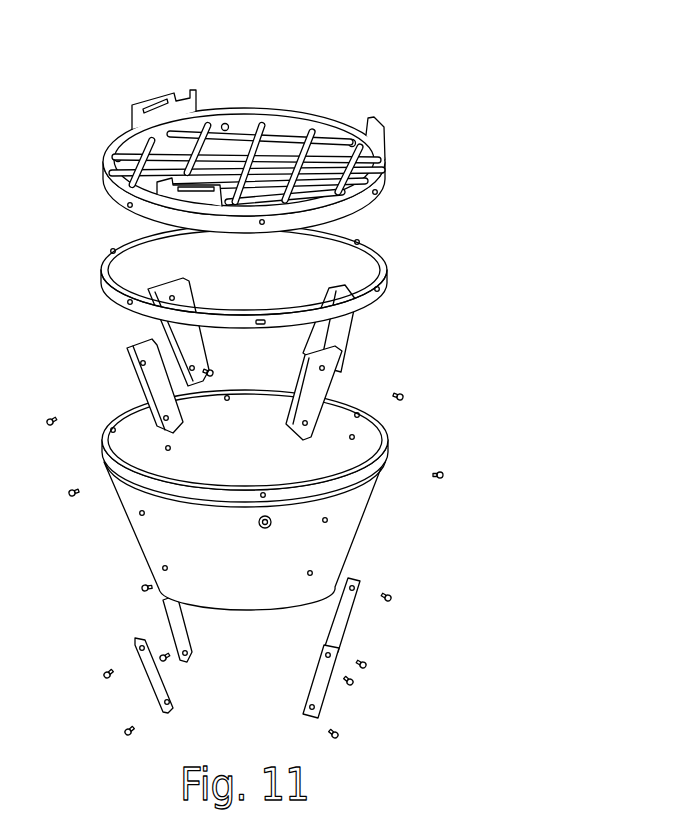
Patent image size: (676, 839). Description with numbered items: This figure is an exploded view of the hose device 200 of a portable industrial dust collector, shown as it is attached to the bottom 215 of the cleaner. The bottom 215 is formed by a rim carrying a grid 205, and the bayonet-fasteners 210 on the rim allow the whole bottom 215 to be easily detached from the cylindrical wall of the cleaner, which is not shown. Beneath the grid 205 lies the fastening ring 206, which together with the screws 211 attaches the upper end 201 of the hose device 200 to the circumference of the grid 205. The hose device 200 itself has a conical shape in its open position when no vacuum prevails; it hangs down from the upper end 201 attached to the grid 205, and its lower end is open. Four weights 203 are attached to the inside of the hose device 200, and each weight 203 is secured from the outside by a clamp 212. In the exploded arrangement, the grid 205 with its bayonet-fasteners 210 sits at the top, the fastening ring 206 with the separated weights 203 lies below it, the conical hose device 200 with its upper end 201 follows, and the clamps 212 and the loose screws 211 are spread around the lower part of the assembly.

The hose device 200 is at (348, 527).
The upper end 201 is at (388, 458).
The weights 203 is at (325, 392).
The grid 205 is at (328, 138).
The fastening ring 206 is at (387, 283).
The bayonet-fasteners 210 is at (148, 97).
The screws 211 is at (247, 122).
The clamp 212 is at (343, 612).
The bottom 215 is at (299, 120).